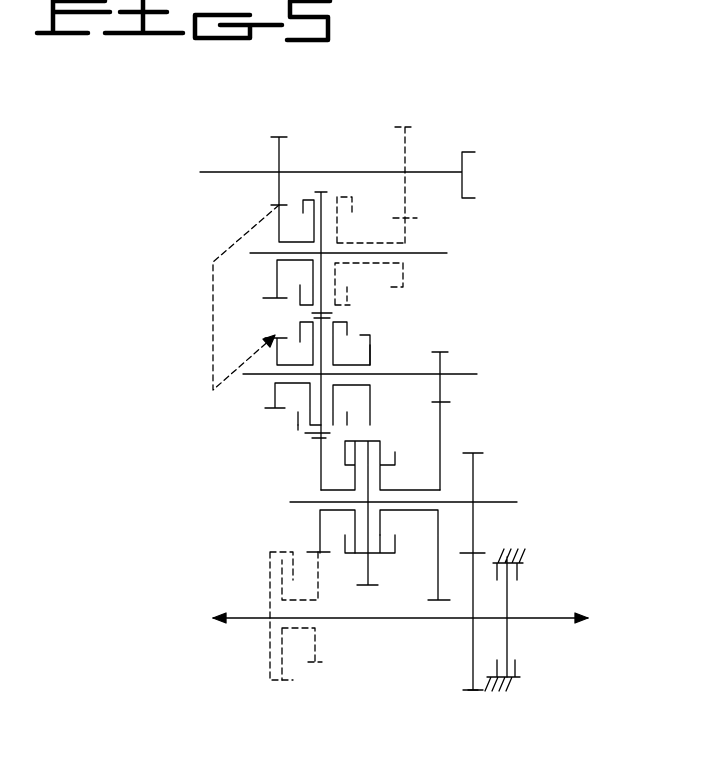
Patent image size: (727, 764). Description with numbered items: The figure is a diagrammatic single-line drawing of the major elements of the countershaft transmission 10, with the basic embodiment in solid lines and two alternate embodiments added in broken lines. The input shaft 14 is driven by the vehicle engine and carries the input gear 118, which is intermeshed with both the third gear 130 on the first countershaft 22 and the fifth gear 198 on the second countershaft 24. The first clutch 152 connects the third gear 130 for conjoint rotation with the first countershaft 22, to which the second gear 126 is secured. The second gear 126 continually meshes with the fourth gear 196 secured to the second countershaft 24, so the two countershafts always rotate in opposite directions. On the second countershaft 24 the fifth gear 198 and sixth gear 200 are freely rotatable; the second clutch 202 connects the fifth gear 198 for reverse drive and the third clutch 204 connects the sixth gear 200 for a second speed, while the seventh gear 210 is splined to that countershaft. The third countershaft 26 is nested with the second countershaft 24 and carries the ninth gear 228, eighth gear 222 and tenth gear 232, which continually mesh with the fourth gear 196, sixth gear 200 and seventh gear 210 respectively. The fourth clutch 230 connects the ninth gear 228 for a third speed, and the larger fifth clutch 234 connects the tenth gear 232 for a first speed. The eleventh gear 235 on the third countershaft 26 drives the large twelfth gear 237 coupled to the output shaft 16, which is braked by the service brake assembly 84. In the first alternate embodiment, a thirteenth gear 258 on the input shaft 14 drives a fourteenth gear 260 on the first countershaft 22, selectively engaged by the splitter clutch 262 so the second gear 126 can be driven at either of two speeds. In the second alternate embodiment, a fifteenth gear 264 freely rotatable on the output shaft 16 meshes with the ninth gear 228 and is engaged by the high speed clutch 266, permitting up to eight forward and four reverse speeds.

The countershaft transmission 10 is at (505, 305).
The input shaft 14 is at (228, 172).
The output shaft 16 is at (440, 622).
The first countershaft 22 is at (447, 253).
The second countershaft 24 is at (477, 377).
The third countershaft 26 is at (500, 502).
The service brake assembly 84 is at (523, 572).
The input gear 118 is at (287, 137).
The second gear 126 is at (327, 190).
The third gear 130 is at (272, 288).
The first clutch 152 is at (303, 189).
The fourth gear 196 is at (305, 437).
The fifth gear 198 is at (275, 408).
The sixth gear 200 is at (372, 352).
The second clutch 202 is at (298, 424).
The third clutch 204 is at (352, 325).
The seventh gear 210 is at (448, 355).
The eighth gear 222 is at (368, 585).
The ninth gear 228 is at (318, 548).
The fourth clutch 230 is at (355, 553).
The tenth gear 232 is at (450, 404).
The fifth clutch 234 is at (378, 449).
The eleventh gear 235 is at (483, 453).
The twelfth gear 237 is at (473, 690).
The thirteenth gear 258 is at (405, 127).
The fourteenth gear 260 is at (405, 287).
The splitter clutch 262 is at (352, 305).
The fifteenth gear 264 is at (318, 662).
The high speed clutch 266 is at (268, 567).